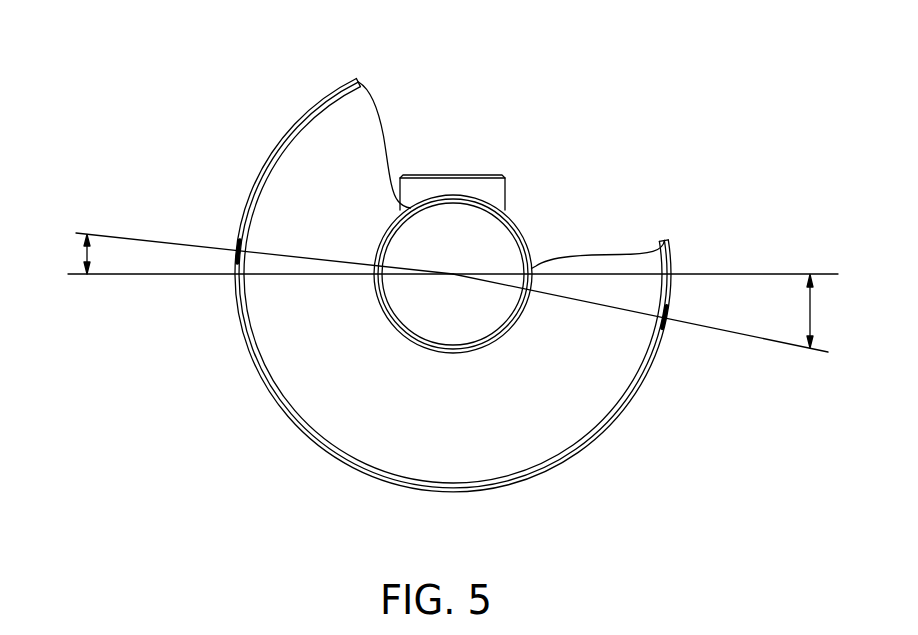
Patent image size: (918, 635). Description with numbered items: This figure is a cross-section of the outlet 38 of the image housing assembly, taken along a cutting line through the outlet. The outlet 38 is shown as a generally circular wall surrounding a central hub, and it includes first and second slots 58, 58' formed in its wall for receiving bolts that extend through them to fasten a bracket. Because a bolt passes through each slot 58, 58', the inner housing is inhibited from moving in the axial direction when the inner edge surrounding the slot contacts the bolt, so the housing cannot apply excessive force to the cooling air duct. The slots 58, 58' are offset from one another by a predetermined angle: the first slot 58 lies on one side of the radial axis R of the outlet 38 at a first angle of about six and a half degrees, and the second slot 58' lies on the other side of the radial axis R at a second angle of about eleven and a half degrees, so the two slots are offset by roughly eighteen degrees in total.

The outlet 38 is at (326, 96).
The first slot 58 is at (690, 343).
The second slot 58' is at (201, 225).
The radial axis R is at (137, 276).